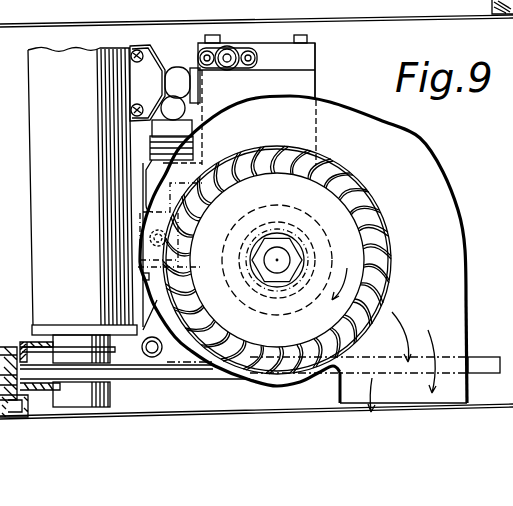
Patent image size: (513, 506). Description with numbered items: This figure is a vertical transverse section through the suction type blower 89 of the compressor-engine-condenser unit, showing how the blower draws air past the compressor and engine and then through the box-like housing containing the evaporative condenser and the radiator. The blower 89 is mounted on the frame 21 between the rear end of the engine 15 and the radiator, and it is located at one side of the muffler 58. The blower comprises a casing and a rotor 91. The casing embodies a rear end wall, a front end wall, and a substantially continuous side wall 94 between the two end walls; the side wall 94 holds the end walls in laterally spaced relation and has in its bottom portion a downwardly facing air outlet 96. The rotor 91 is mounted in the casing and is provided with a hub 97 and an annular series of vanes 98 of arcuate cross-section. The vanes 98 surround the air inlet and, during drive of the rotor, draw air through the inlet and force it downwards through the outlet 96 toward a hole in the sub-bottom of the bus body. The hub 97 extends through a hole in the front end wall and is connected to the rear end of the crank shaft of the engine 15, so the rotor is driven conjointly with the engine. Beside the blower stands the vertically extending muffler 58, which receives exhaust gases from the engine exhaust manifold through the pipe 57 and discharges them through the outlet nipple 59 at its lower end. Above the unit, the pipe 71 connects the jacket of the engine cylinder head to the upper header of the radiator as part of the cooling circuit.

The pipe 57 is at (143, 80).
The muffler 58 is at (80, 186).
The pipe 71 is at (239, 100).
The engine 15 is at (318, 86).
The blower 89 is at (423, 137).
The side wall 94 is at (460, 208).
The air outlet 96 is at (462, 385).
The rotor 91 is at (400, 239).
The vanes 98 is at (372, 297).
The hub 97 is at (300, 263).
The frame 21 is at (23, 327).
The outlet nipple 59 is at (112, 390).